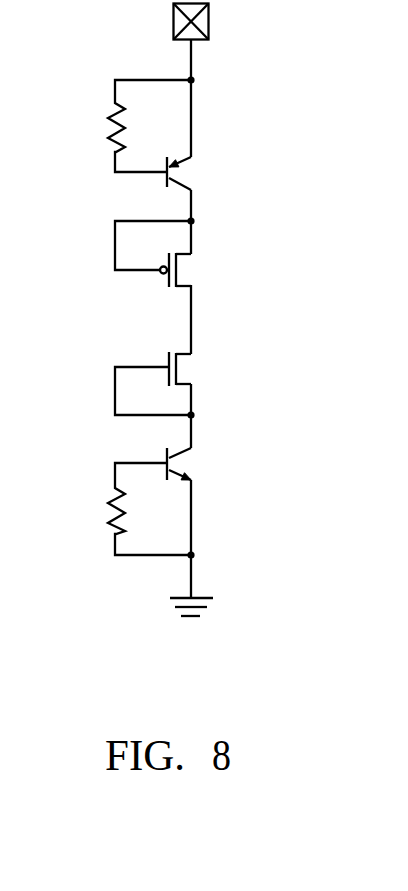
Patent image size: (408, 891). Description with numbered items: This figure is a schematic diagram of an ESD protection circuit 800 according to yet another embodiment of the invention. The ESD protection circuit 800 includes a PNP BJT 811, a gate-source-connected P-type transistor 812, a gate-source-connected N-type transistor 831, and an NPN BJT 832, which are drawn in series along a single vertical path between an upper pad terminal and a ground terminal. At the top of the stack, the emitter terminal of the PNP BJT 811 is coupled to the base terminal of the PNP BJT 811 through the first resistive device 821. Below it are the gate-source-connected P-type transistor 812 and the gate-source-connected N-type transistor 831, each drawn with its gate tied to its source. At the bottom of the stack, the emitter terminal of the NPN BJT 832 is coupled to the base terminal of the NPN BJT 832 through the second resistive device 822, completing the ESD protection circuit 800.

The ESD protection circuit 800 is at (149, 324).
The PNP BJT 811 is at (186, 172).
The gate-source-connected P-type transistor 812 is at (187, 269).
The first resistive device 821 is at (105, 133).
The second resistive device 822 is at (105, 515).
The gate-source-connected N-type transistor 831 is at (187, 367).
The NPN BJT 832 is at (184, 464).